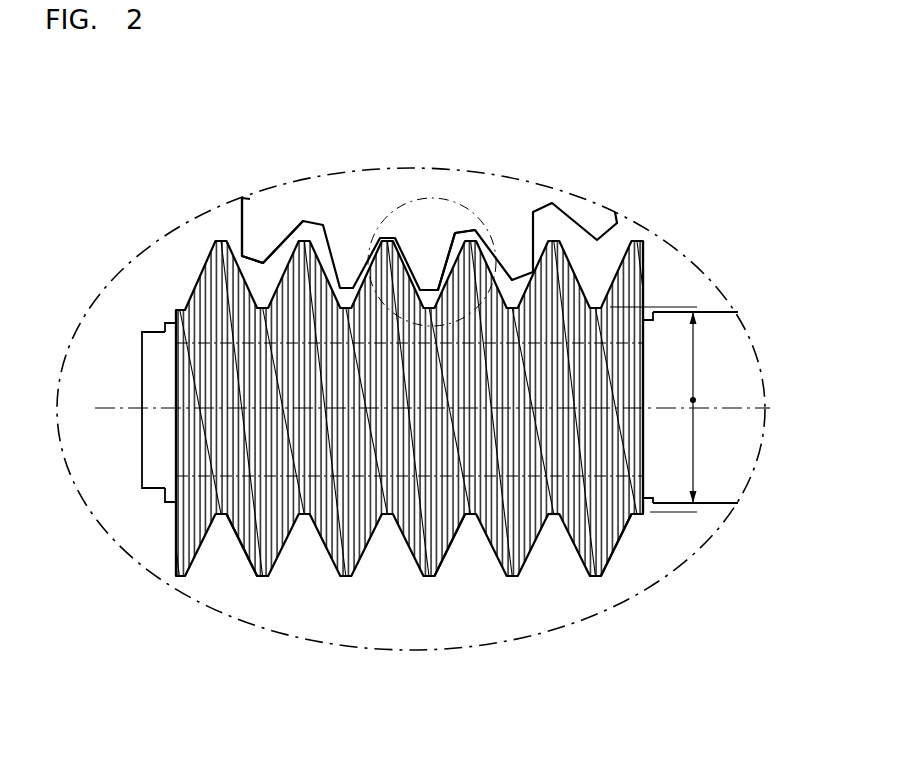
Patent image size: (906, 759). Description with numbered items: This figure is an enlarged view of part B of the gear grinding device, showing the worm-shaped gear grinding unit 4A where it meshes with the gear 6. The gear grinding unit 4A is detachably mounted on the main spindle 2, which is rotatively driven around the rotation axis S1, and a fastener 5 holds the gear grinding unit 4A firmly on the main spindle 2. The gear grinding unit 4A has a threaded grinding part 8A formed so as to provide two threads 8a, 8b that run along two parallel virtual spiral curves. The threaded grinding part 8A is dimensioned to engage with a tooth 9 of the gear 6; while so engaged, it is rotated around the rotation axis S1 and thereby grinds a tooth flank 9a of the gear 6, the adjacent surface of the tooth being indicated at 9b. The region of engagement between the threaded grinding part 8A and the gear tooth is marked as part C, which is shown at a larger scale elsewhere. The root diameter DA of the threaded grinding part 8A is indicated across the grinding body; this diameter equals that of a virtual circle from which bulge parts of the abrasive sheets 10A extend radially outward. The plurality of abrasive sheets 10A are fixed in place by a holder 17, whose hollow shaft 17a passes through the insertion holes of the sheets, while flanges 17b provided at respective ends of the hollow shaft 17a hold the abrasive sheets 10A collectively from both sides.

The main spindle 2 is at (713, 312).
The gear grinding unit 4A is at (180, 268).
The fastener 5 is at (142, 342).
The gear 6 is at (318, 222).
The threaded grinding part 8A is at (369, 570).
The thread 8a is at (405, 258).
The thread 8b is at (492, 262).
The tooth 9 is at (242, 222).
The tooth flank 9a is at (420, 272).
The tooth root of worm wheel 9b is at (460, 241).
The abrasive sheet 10A is at (243, 543).
The holder 17 is at (155, 319).
The hollow shaft 17a is at (524, 514).
The flange 17b is at (648, 432).
The part B is at (672, 236).
The part C is at (374, 228).
The rotation axis S1 is at (101, 393).
The root diameter DA is at (696, 400).